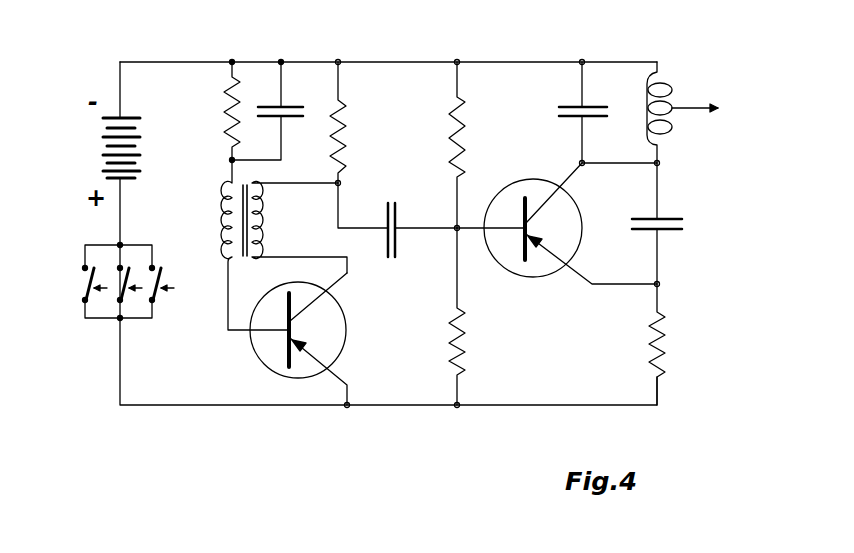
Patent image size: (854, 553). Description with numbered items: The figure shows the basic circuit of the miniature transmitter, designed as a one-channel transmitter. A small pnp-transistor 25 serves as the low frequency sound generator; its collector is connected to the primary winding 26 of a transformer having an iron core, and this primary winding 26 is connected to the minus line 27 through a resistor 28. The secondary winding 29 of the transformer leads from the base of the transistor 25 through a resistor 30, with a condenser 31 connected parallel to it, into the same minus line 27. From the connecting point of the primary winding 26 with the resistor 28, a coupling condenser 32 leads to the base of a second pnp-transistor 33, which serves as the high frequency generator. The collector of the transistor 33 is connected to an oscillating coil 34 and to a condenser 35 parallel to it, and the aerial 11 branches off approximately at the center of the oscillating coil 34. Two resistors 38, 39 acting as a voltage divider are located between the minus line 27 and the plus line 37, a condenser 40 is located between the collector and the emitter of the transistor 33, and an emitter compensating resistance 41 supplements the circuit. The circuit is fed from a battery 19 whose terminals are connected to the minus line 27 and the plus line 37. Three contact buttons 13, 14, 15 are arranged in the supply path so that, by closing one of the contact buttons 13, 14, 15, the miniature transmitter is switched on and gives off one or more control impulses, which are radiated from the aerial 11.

The aerial 11 is at (704, 102).
The contact button 13 is at (82, 291).
The contact button 14 is at (118, 290).
The contact button 15 is at (160, 300).
The battery 19 is at (132, 158).
The pnp-transistor 25 is at (325, 335).
The primary winding 26 is at (262, 243).
The minus line 27 is at (313, 58).
The resistor 28 is at (350, 128).
The secondary winding 29 is at (222, 206).
The resistor 30 is at (224, 102).
The condenser 31 is at (286, 104).
The coupling condenser 32 is at (396, 213).
The pnp-transistor 33 is at (565, 211).
The oscillating coil 34 is at (667, 87).
The capacitor 35 is at (560, 105).
The plus line 37 is at (429, 410).
The resistor 38 is at (465, 342).
The resistor 39 is at (465, 132).
The condenser 40 is at (672, 221).
The emitter compensating resistance 41 is at (662, 346).